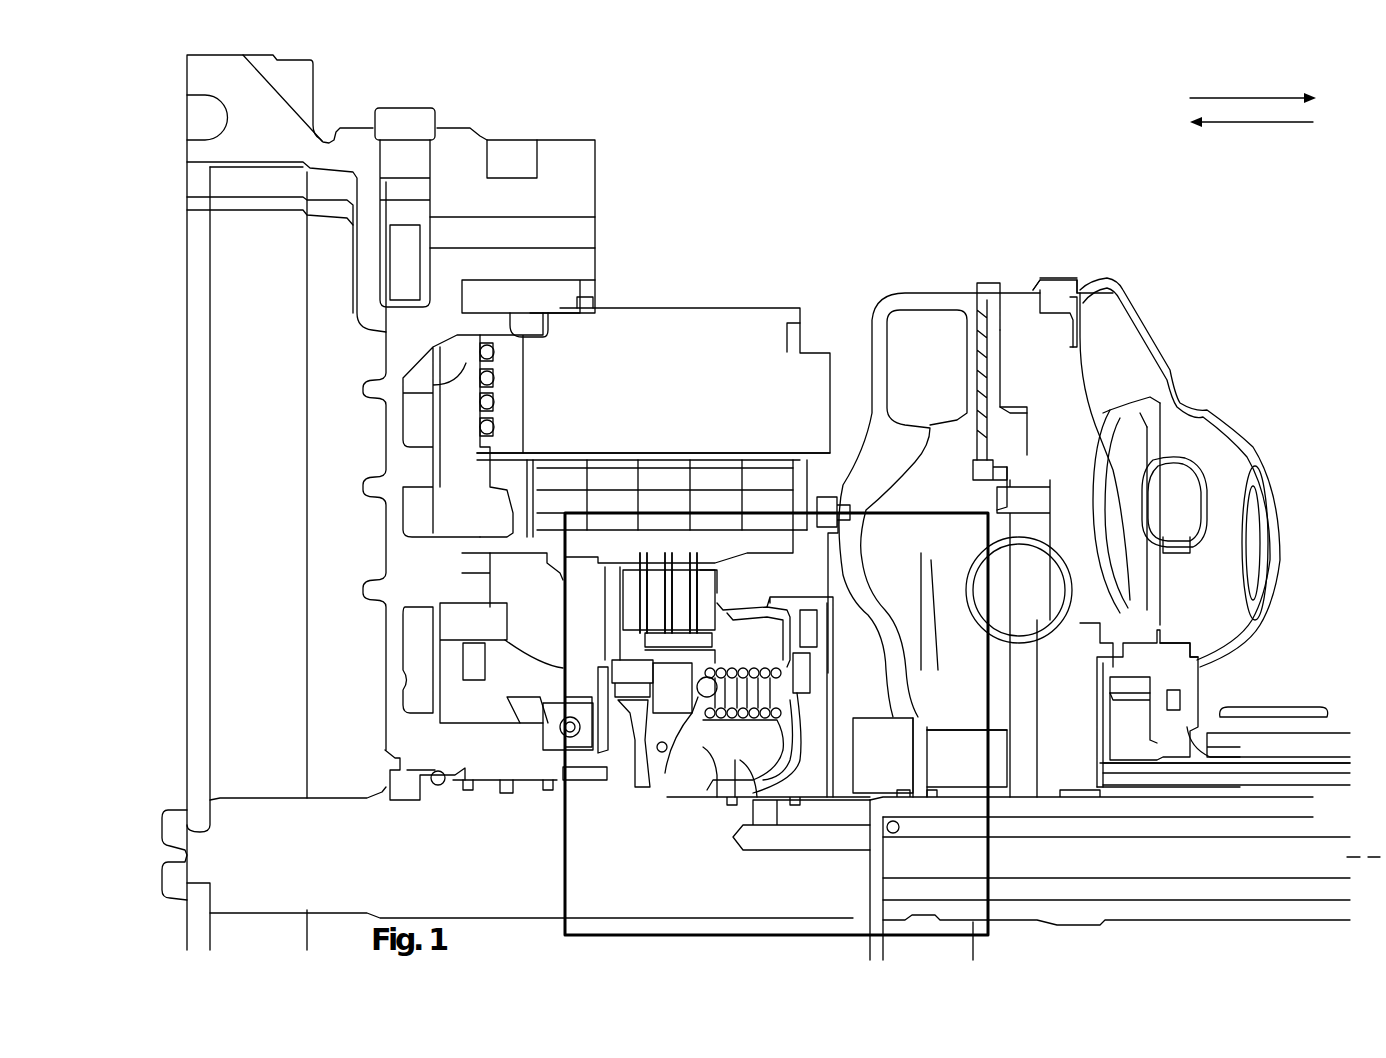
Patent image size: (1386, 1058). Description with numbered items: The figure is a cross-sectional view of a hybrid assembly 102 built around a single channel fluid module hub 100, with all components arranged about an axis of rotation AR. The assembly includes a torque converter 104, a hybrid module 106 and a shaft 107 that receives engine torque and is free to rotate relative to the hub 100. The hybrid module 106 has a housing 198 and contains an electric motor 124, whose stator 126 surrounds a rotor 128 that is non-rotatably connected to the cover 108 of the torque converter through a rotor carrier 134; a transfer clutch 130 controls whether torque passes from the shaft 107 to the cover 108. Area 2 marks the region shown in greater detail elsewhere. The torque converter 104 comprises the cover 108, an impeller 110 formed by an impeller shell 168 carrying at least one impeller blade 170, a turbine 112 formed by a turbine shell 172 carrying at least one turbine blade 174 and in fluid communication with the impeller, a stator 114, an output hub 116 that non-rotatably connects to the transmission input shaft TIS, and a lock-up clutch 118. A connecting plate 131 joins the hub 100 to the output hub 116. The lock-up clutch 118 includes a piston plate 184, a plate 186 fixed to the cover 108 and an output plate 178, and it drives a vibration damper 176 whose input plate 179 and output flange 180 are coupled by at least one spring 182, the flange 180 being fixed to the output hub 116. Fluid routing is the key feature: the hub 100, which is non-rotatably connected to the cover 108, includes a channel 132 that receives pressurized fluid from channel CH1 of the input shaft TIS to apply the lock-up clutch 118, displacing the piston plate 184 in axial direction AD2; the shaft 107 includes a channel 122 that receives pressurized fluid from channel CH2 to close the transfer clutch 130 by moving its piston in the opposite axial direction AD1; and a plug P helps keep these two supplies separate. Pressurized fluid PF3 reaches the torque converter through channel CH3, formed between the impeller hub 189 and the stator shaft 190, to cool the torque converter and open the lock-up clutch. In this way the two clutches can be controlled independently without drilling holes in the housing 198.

The housing 198 is at (569, 133).
The hybrid module 106 is at (645, 236).
The electric motor 124 is at (652, 303).
The stator 126 is at (717, 473).
The rotor 128 is at (750, 540).
The transfer clutch 130 is at (763, 572).
The rotor carrier 134 is at (625, 548).
The area 2 is at (563, 762).
The shaft 107 is at (250, 793).
The axis of rotation AR is at (233, 855).
The channel 122 is at (781, 856).
The plug P is at (887, 827).
The channel 132 is at (913, 757).
The module hub 100 is at (963, 722).
The cover 108 is at (887, 305).
The lock-up clutch 118 is at (949, 318).
The piston plate 184 is at (957, 375).
The output plate 178 is at (977, 345).
The plate 186 is at (1033, 315).
The vibration damper 176 is at (1020, 463).
The torque converter 104 is at (1064, 268).
The turbine shell 172 is at (1076, 325).
The turbine 112 is at (1106, 412).
The impeller 110 is at (1224, 390).
The impeller shell 168 is at (1255, 445).
The impeller blade 170 is at (1209, 452).
The turbine blade 174 is at (1134, 523).
The spring 182 is at (1042, 548).
The input plate 179 is at (992, 470).
The output flange 180 is at (1027, 680).
The stator 114 is at (1173, 667).
The impeller hub 189 is at (1267, 717).
The pressurized fluid PF3 is at (1213, 740).
The channel CH3 is at (1323, 757).
The stator shaft 190 is at (1287, 740).
The connecting plate 131 is at (1005, 772).
The output hub 116 is at (1000, 797).
The transmission input shaft TIS is at (1119, 928).
The channel CH2 is at (1252, 883).
The channel CH1 is at (1310, 823).
The hybrid assembly 102 is at (1099, 138).
The axial direction AD1 is at (1255, 122).
The axial direction AD2 is at (1232, 98).